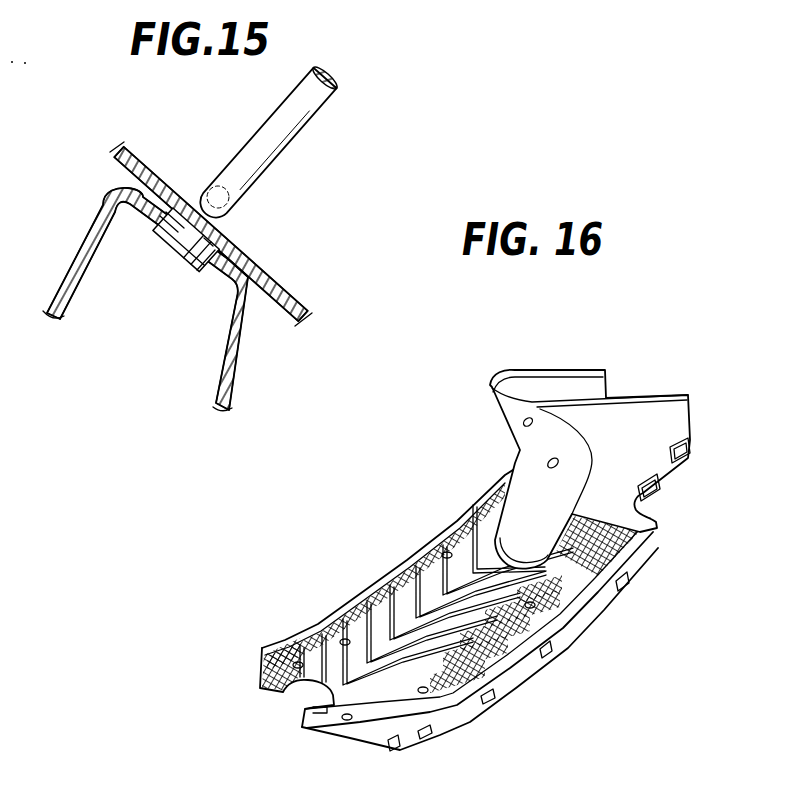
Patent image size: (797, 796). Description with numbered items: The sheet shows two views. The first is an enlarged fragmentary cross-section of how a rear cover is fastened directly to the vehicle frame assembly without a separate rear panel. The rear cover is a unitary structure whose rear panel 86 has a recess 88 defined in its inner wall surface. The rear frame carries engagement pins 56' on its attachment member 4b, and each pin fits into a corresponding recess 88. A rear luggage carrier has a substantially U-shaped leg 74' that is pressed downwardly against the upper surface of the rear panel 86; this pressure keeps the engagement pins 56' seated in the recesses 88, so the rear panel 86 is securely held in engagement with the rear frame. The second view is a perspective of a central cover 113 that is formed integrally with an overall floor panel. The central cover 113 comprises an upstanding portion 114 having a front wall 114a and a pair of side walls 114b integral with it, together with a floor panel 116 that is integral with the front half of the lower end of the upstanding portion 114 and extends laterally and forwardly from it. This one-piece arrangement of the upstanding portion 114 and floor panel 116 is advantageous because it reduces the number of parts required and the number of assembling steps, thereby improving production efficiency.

In FIG. 15, the attachment member 4b is at (77, 257).
In FIG. 15, the engagement pins 56' is at (168, 251).
In FIG. 15, the U-shaped leg 74' is at (287, 141).
In FIG. 15, the rear panel 86 is at (287, 288).
In FIG. 15, the recess 88 is at (205, 246).
In FIG. 16, the central cover 113 is at (509, 521).
In FIG. 16, the upstanding portion 114 is at (579, 449).
In FIG. 16, the front wall 114a is at (537, 450).
In FIG. 16, the side walls 114b is at (668, 428).
In FIG. 16, the floor panel 116 is at (380, 593).